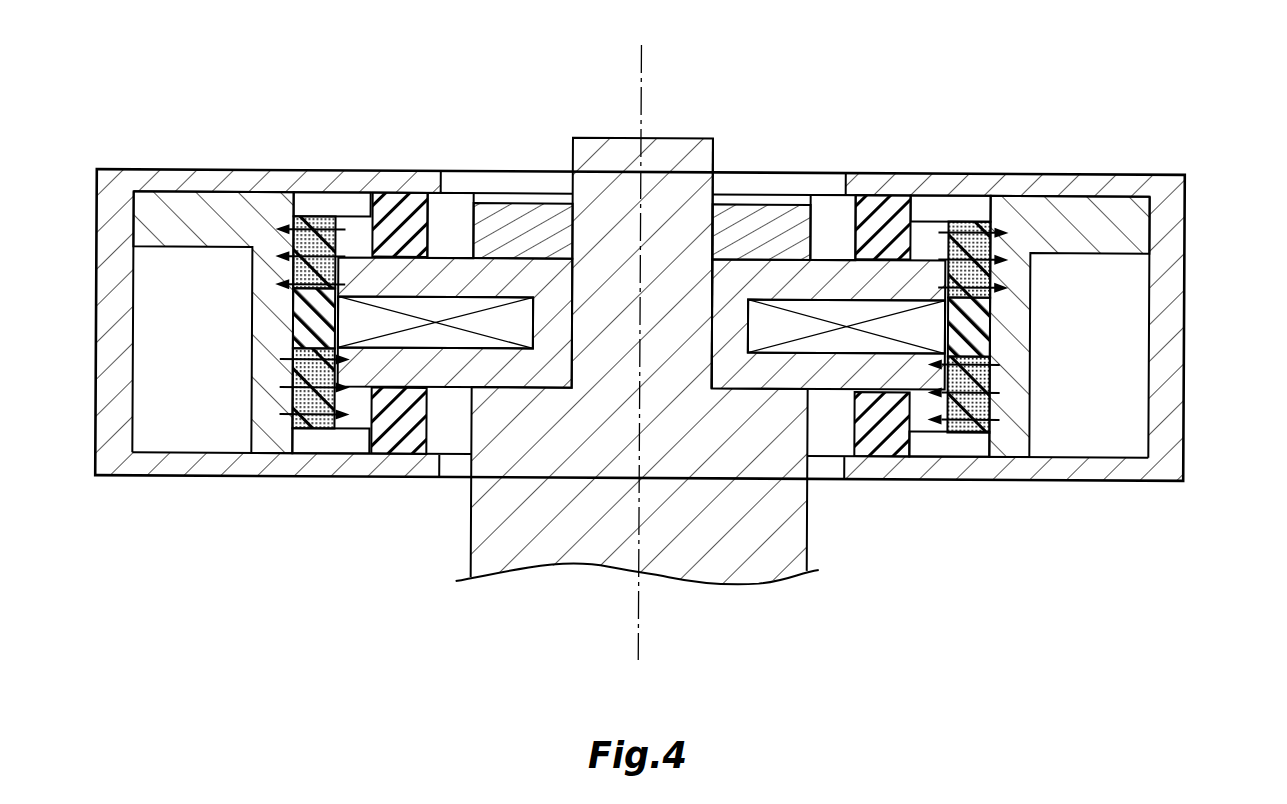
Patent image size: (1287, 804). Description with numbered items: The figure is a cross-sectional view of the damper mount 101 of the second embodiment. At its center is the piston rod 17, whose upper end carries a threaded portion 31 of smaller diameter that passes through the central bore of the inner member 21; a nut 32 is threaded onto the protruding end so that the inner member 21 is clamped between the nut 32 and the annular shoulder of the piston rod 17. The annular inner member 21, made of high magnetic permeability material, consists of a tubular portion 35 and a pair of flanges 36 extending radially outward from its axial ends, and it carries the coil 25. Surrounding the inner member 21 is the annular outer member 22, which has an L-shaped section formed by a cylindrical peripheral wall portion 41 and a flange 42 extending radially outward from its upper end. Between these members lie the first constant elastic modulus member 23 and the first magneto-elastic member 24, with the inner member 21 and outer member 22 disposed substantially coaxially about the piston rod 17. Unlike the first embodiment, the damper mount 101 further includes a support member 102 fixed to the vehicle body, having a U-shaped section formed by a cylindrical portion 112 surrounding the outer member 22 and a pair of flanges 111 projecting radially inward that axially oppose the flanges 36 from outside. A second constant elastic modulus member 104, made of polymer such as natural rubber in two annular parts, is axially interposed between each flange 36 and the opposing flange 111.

The damper mount 101 is at (330, 95).
The piston rod 17 is at (472, 537).
The threaded portion 31 is at (592, 138).
The tubular portion 35 is at (708, 283).
The inner member 21 is at (785, 258).
The coil 25 is at (432, 292).
The nut 32 is at (527, 204).
The flange 36 is at (837, 259).
The second constant elastic modulus member 104 is at (885, 194).
The support member 102 is at (1013, 172).
The flange 111 is at (1072, 173).
The cylindrical portion 112 is at (1186, 320).
The outer member 22 is at (1131, 190).
The peripheral wall portion 41 is at (1030, 377).
The flange 42 is at (1108, 255).
The first constant elastic modulus member 23 is at (990, 329).
The first magneto-elastic member 24 is at (990, 277).